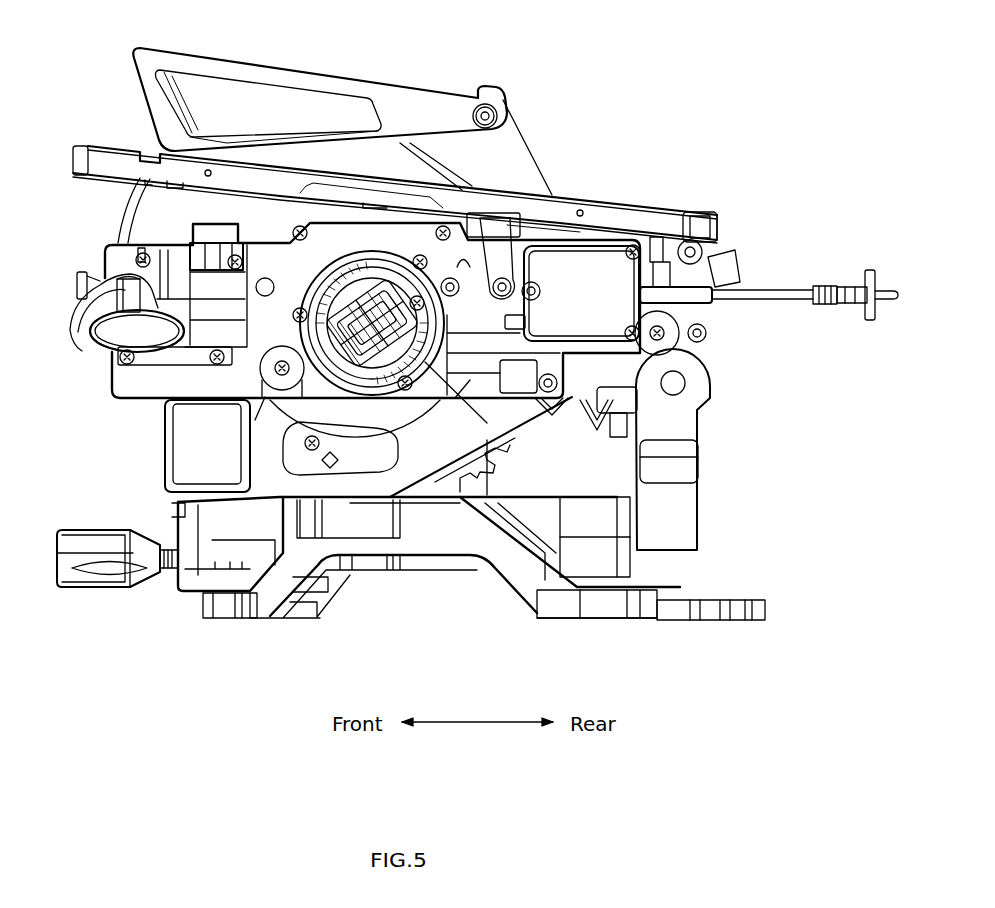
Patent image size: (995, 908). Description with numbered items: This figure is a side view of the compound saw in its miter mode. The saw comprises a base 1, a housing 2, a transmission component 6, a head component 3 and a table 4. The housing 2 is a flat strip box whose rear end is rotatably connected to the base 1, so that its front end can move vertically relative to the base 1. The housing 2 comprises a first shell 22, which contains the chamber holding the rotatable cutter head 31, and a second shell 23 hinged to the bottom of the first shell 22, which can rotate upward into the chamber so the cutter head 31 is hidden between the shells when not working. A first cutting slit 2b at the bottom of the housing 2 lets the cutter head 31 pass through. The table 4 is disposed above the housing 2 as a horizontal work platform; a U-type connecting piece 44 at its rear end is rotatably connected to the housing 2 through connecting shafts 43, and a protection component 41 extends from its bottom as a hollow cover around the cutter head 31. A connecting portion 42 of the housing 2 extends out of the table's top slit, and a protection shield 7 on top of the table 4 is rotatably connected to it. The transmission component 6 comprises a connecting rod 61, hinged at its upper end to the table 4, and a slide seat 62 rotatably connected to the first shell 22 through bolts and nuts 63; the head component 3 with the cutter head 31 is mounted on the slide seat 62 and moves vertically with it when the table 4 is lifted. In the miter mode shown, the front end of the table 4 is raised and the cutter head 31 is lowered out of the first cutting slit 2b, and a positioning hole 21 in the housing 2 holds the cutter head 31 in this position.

The base 1 is at (267, 597).
The housing 2 is at (365, 381).
The first cutting slit 2b is at (425, 482).
The positioning hole 21 is at (257, 286).
The first shell 22 is at (158, 380).
The second shell 23 is at (225, 480).
The head component 3 is at (480, 397).
The cutter head 31 is at (493, 478).
The table 4 is at (769, 229).
The protection component 41 is at (143, 217).
The connecting portion 42 is at (513, 160).
The connecting shafts 43 is at (702, 237).
The U-type connecting piece 44 is at (687, 240).
The transmission component 6 is at (572, 293).
The connecting rod 61 is at (522, 275).
The slide seat 62 is at (522, 320).
The bolts and nuts 63 is at (452, 270).
The protection shield 7 is at (396, 100).